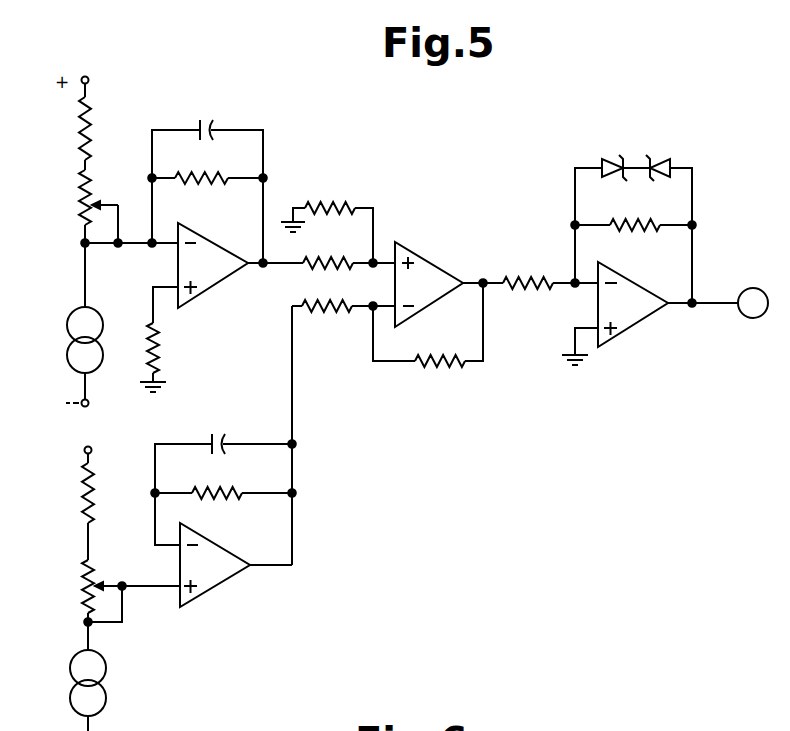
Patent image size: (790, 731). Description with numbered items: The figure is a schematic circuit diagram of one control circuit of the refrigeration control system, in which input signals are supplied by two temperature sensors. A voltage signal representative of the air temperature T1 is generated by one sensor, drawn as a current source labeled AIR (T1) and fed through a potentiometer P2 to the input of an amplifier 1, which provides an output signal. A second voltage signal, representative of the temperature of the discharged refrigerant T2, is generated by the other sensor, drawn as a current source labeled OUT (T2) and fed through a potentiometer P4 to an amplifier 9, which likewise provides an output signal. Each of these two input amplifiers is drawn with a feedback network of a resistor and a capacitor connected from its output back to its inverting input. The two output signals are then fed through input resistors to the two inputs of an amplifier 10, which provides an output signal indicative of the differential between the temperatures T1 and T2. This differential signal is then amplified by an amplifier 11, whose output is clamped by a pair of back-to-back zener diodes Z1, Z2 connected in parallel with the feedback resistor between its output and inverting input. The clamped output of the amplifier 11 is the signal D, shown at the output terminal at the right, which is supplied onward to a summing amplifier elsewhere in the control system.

The amplifier 1 is at (203, 256).
The amplifier 9 is at (209, 520).
The amplifier 10 is at (392, 284).
The amplifier 11 is at (620, 247).
The potentiometer P2 is at (81, 206).
The potentiometer P4 is at (83, 586).
The zener diode Z1 is at (615, 155).
The zener diode Z2 is at (658, 155).
The signal D is at (753, 303).
The air temperature T1 is at (60, 340).
The temperature of the discharged refrigerant T2 is at (64, 683).